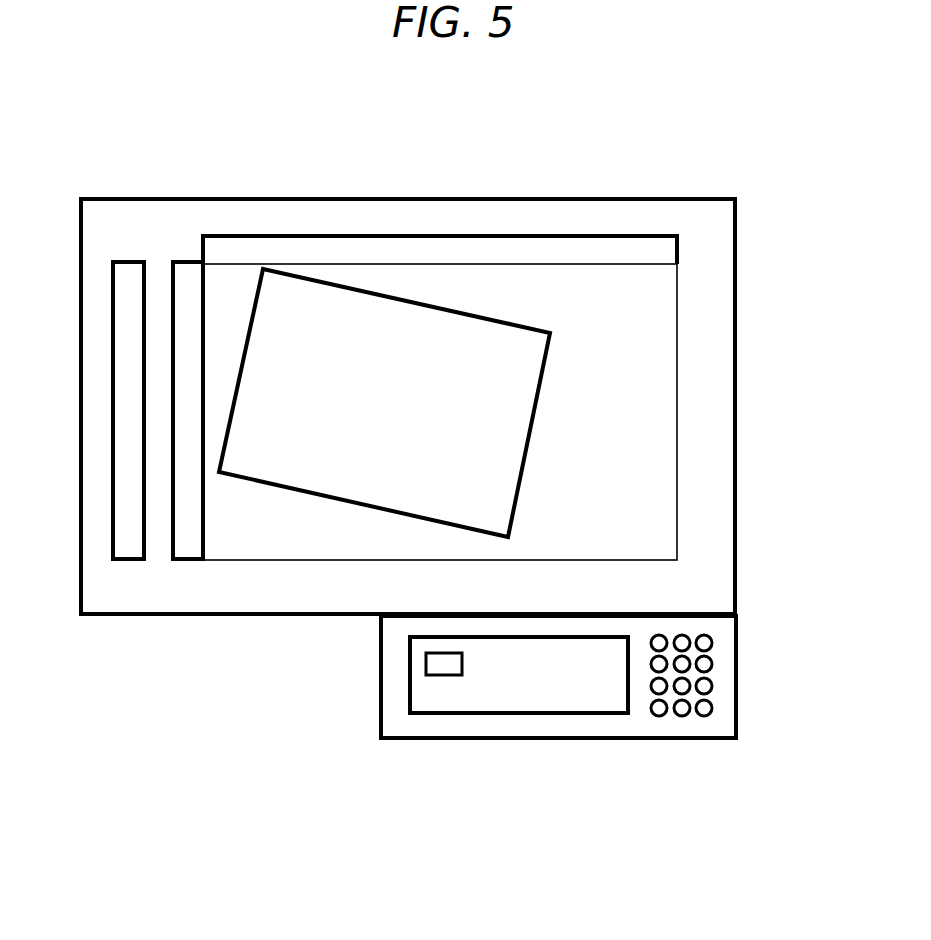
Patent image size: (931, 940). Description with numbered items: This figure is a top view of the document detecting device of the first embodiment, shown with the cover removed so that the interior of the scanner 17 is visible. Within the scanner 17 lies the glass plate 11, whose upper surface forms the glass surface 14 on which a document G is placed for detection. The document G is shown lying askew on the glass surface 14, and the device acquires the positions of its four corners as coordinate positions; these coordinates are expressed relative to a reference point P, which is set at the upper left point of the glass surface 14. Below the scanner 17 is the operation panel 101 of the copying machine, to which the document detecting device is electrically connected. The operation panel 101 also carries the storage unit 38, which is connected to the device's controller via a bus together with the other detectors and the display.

The reference point P is at (210, 257).
The document G is at (378, 302).
The glass surface 14 is at (574, 294).
The scanner 17 is at (737, 300).
The glass plate 11 is at (673, 493).
The operation panel 101 is at (381, 651).
The storage unit 38 is at (438, 675).